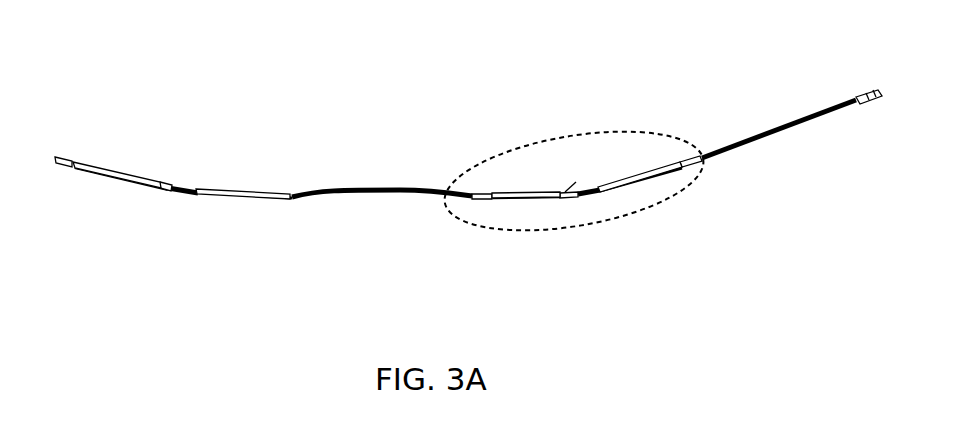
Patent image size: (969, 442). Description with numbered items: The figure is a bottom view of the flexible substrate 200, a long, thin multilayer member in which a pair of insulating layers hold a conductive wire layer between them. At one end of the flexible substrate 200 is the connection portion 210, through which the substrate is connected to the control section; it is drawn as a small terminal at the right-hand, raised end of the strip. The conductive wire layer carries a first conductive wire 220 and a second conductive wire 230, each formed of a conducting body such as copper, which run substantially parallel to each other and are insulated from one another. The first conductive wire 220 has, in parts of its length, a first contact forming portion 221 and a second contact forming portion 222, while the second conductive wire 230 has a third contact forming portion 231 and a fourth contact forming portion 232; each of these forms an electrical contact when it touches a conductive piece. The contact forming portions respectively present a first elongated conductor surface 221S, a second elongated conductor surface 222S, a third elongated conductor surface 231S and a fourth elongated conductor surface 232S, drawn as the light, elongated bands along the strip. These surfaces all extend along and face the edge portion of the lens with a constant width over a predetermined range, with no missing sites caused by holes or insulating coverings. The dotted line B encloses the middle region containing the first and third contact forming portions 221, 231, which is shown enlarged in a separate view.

The flexible substrate 200 is at (432, 102).
The connection portion 210 is at (872, 95).
The first conductive wire 220 is at (818, 115).
The first contact forming portion 221 is at (675, 162).
The first elongated conductor surface 221S is at (605, 183).
The second contact forming portion 222 is at (275, 190).
The second elongated conductor surface 222S is at (212, 190).
The second conductive wire 230 is at (840, 118).
The third contact forming portion 231 is at (557, 198).
The third elongated conductor surface 231S is at (488, 198).
The fourth contact forming portion 232 is at (150, 188).
The fourth elongated conductor surface 232S is at (90, 170).
The portion indicated by dotted line B is at (573, 181).